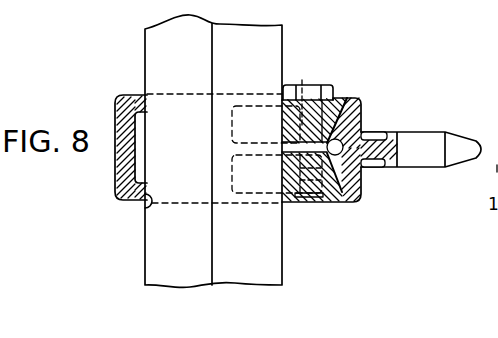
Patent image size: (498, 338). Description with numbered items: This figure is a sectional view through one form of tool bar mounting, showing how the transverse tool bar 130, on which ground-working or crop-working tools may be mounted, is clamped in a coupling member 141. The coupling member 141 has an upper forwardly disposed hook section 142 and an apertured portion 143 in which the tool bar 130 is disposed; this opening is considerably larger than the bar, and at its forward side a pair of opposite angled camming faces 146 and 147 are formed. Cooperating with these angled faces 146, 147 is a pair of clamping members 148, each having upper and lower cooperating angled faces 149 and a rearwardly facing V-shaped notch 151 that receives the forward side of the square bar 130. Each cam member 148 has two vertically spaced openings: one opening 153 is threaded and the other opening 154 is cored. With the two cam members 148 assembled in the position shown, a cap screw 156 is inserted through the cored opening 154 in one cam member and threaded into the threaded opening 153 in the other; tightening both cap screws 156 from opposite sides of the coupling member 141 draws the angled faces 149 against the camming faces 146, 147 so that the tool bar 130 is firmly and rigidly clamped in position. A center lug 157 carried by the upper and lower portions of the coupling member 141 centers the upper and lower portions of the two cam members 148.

The tool bar 130 is at (228, 281).
The coupling member 141 is at (110, 182).
The apertured portion 143 is at (146, 204).
The clamping member 148 is at (281, 100).
The V-shaped notch 151 is at (282, 126).
The center lug 157 is at (280, 146).
The cored opening 154 is at (295, 93).
The cap screw 156 is at (315, 94).
The camming face 146 is at (338, 103).
The camming face 147 is at (331, 202).
The angled face 149 is at (359, 167).
The hook section 142 is at (456, 145).
The threaded opening 153 is at (304, 195).